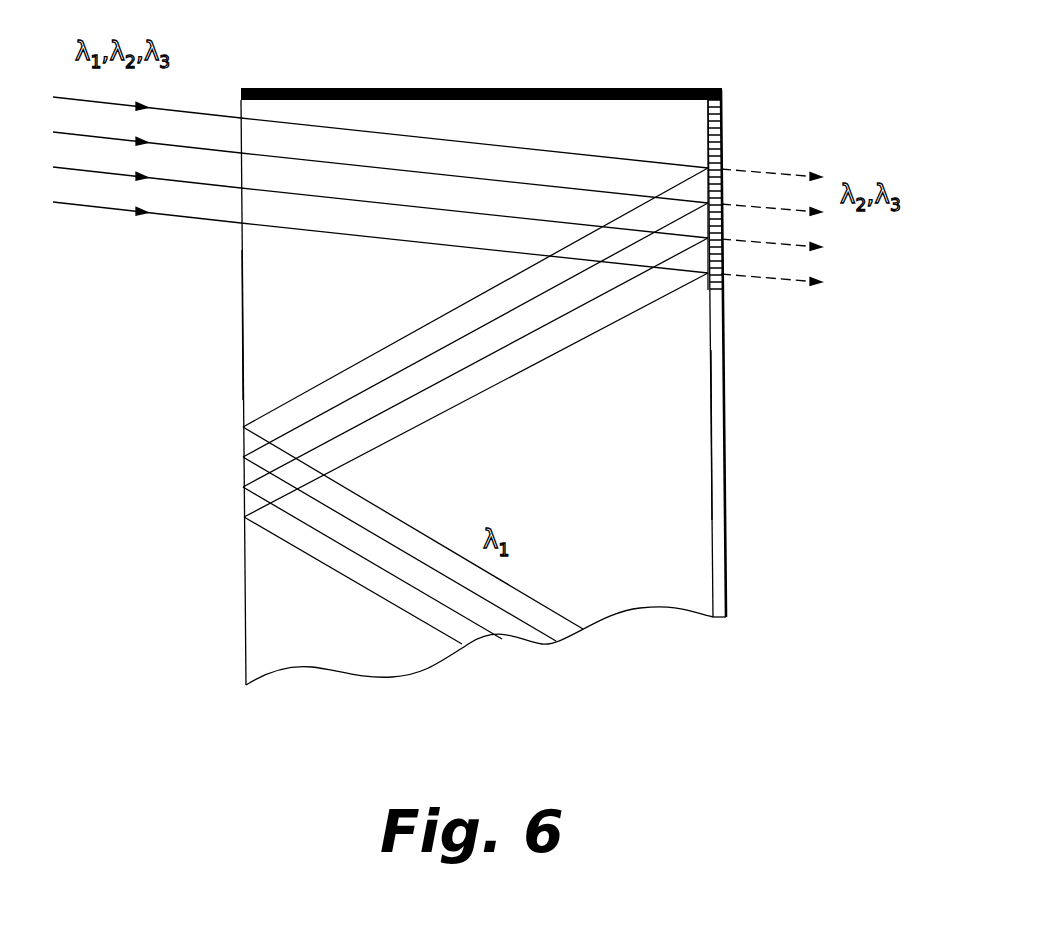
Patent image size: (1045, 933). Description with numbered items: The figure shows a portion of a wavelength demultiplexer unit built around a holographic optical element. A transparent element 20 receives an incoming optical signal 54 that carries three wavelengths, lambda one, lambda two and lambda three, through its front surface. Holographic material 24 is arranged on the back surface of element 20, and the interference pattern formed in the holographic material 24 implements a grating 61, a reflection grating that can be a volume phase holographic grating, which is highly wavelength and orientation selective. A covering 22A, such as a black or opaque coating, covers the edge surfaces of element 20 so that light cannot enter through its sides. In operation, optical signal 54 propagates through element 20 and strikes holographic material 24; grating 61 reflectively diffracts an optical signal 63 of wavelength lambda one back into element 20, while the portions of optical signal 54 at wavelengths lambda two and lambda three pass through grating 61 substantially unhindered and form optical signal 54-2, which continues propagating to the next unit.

The element 20 is at (283, 278).
The covering 22A is at (604, 88).
The holographic material 24 is at (723, 114).
The optical signal 54 is at (101, 232).
The optical signal 54-2 is at (770, 304).
The grating 61 is at (742, 136).
The optical signal 63 is at (516, 408).